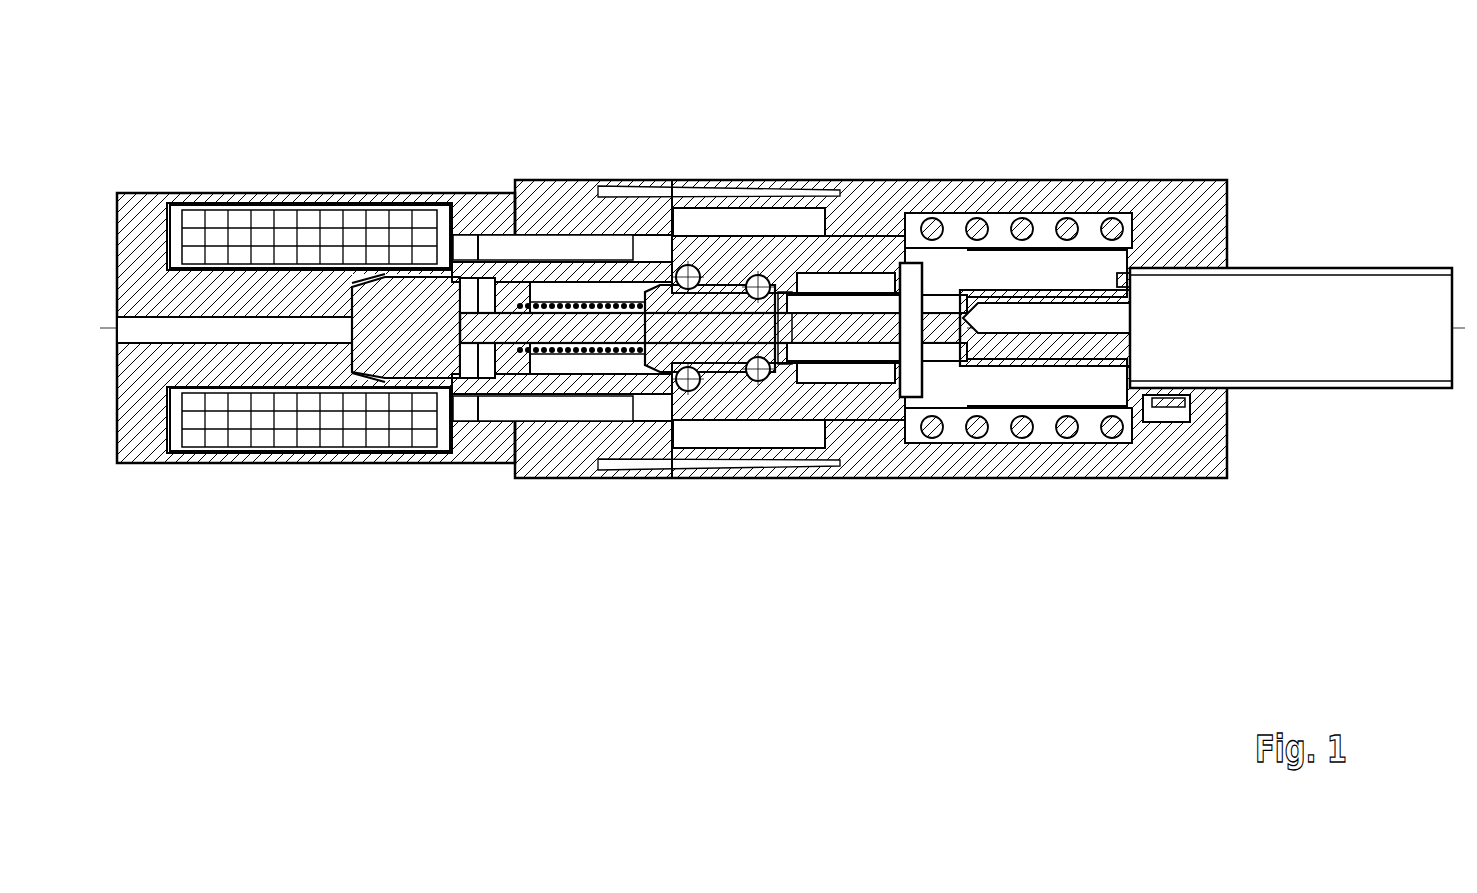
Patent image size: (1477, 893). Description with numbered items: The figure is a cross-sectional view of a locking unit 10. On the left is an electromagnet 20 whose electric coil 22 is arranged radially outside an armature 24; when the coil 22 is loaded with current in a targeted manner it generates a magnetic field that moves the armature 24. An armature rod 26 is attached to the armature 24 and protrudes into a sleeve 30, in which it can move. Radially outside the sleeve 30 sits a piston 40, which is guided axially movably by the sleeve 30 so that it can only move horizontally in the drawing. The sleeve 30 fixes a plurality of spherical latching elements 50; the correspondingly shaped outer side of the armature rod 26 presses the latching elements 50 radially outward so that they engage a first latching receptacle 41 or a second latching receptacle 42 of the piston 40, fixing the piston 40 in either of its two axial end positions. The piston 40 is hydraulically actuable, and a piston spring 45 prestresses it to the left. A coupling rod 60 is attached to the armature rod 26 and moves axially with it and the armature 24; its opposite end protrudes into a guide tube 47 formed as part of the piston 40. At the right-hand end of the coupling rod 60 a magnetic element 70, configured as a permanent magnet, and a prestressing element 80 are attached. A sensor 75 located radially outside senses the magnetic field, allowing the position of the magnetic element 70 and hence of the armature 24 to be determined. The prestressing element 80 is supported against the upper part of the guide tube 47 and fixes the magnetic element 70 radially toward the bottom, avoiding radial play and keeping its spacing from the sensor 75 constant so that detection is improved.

The locking unit 10 is at (320, 624).
The electromagnet 20 is at (262, 157).
The electric coil 22 is at (347, 220).
The armature 24 is at (425, 372).
The armature rod 26 is at (650, 400).
The sleeve 30 is at (611, 275).
The piston 40 is at (800, 237).
The first latching receptacle 41 is at (688, 360).
The second latching receptacle 42 is at (912, 237).
The piston spring 45 is at (1027, 215).
The guide tube 47 is at (1315, 268).
The latching elements 50 is at (758, 357).
The coupling rod 60 is at (840, 345).
The magnetic element 70 is at (1175, 365).
The sensor 75 is at (1168, 410).
The prestressing element 80 is at (1165, 275).